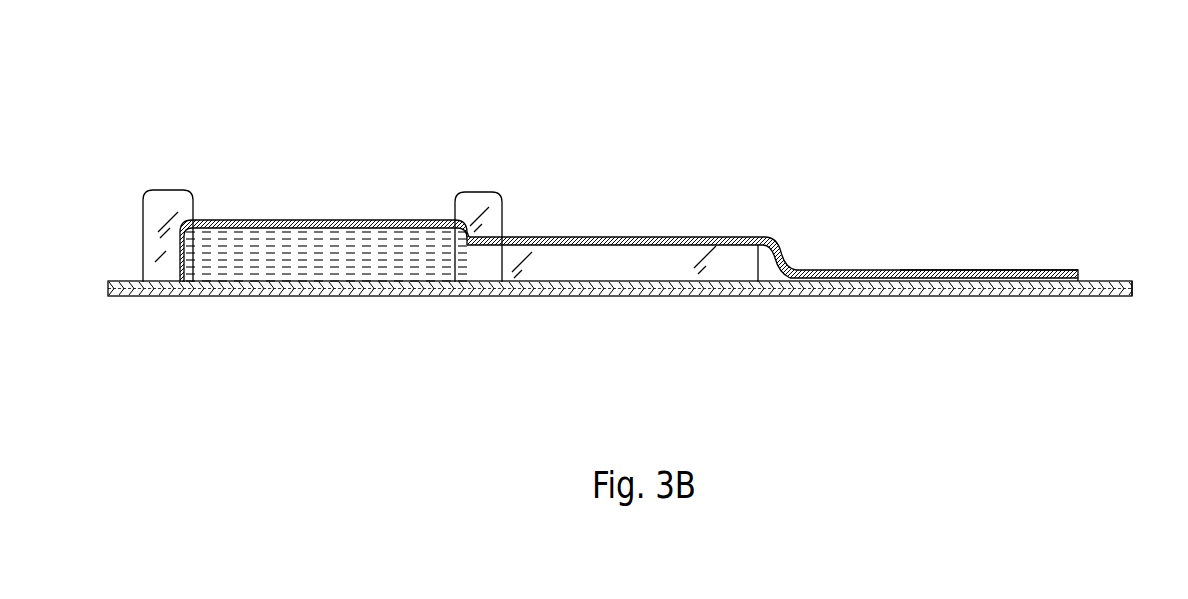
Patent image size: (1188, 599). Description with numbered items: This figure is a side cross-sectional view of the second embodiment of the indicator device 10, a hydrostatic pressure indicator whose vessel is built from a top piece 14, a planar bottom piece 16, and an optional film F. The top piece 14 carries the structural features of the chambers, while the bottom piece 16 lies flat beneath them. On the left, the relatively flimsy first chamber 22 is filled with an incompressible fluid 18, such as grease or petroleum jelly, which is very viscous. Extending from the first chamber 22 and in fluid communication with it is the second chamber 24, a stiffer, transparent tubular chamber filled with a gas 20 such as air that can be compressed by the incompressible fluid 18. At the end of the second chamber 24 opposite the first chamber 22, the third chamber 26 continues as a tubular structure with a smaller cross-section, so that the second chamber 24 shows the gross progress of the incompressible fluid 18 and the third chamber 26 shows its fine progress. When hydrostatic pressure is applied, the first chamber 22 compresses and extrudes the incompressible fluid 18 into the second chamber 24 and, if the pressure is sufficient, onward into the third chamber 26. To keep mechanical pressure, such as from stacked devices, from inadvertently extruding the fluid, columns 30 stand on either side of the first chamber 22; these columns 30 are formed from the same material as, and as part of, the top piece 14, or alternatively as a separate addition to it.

The indicator device 10 is at (126, 105).
The top piece 14 is at (128, 280).
The bottom piece 16 is at (1136, 272).
The incompressible fluid 18 is at (230, 235).
The gas 20 is at (940, 270).
The first chamber 22 is at (333, 218).
The second chamber 24 is at (587, 237).
The third chamber 26 is at (832, 270).
The columns 30 is at (176, 188).
The film F is at (1134, 297).